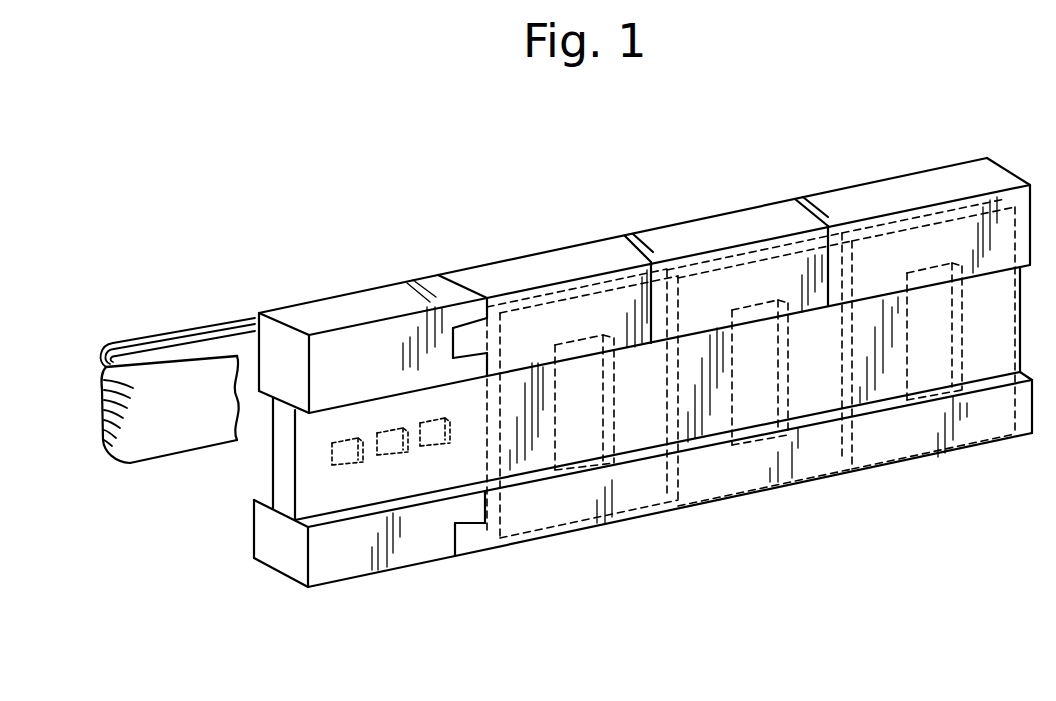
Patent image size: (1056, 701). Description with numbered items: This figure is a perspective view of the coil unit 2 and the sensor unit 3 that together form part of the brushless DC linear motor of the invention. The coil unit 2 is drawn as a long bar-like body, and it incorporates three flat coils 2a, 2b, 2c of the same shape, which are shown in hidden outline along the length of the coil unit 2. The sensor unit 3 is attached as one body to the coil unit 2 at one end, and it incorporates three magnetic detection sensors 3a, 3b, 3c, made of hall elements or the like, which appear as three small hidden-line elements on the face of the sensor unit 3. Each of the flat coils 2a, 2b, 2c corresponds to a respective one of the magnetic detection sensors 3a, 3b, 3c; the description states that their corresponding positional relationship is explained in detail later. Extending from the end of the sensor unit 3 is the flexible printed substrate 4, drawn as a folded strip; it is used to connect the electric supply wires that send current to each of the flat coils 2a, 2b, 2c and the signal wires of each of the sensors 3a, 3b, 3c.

The coil unit 2 is at (737, 225).
The flat coil 2a is at (932, 248).
The flat coil 2b is at (752, 280).
The flat coil 2c is at (577, 318).
The sensor unit 3 is at (357, 302).
The magnetic detection sensor 3a is at (357, 456).
The magnetic detection sensor 3b is at (403, 449).
The magnetic detection sensor 3c is at (447, 440).
The flexible printed substrate 4 is at (183, 327).